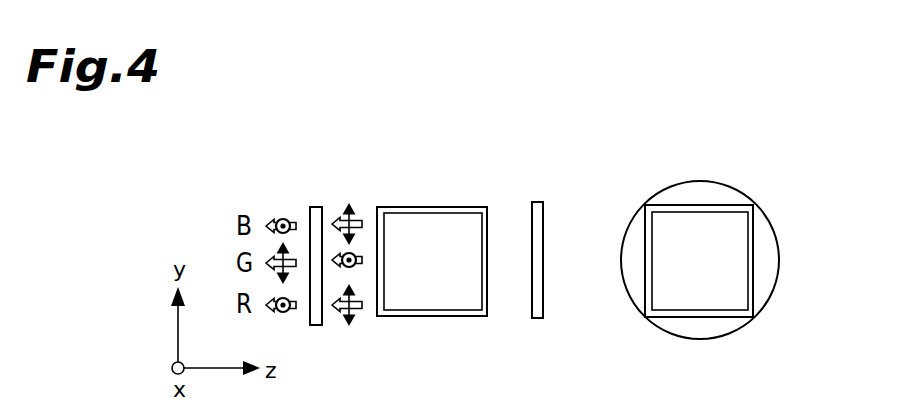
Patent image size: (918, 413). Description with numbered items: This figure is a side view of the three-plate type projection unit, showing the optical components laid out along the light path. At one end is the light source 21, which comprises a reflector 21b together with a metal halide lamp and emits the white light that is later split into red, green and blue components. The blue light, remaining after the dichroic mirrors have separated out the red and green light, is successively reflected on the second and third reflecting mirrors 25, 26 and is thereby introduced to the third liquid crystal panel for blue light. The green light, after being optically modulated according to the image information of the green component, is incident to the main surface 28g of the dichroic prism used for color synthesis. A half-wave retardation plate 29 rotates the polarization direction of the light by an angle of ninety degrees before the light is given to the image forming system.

The λ/2 retardation plate 29 is at (316, 212).
The third reflecting mirror 26 is at (420, 222).
The main surface of the dichroic prism 28g is at (537, 205).
The light source 21 is at (773, 212).
The reflector 21b is at (769, 252).
The second reflecting mirror 25 is at (701, 205).